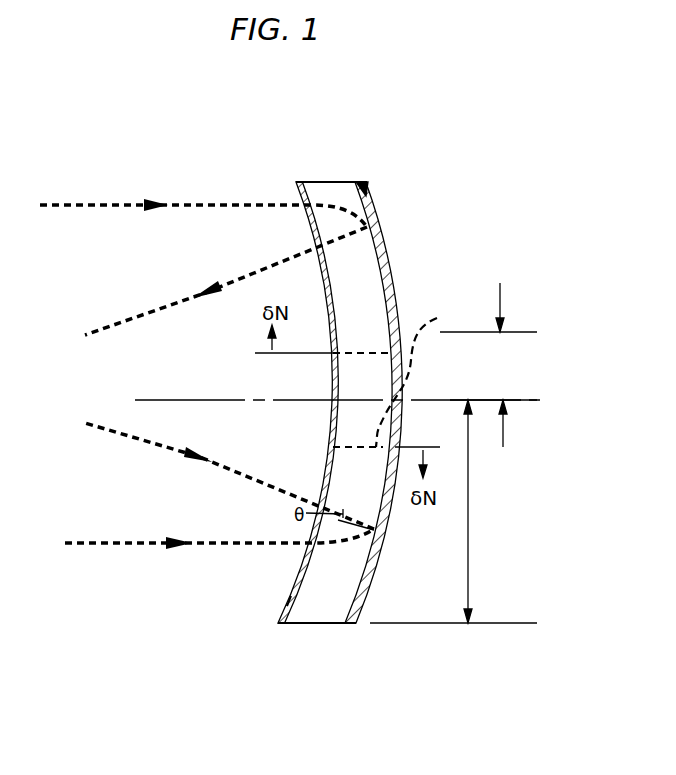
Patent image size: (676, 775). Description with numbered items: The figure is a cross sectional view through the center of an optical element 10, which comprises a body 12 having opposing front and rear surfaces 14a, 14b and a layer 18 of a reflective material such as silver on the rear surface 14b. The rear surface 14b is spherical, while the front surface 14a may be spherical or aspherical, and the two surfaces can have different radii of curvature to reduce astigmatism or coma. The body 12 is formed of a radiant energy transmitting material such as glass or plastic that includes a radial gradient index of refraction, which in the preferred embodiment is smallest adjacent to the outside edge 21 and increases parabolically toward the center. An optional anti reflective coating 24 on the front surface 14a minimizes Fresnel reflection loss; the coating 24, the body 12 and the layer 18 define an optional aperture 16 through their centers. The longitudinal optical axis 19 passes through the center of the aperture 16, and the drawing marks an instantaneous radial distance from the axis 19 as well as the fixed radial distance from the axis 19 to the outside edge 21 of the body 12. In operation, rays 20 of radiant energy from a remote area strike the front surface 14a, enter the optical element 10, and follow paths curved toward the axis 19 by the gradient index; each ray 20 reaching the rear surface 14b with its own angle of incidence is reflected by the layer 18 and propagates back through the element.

The optical element 10 is at (340, 98).
The body 12 is at (325, 181).
The front surface 14a is at (291, 584).
The rear surface 14b is at (366, 181).
The aperture 16 is at (416, 371).
The layer of reflective material 18 is at (392, 266).
The longitudinal optical axis 19 is at (528, 400).
The rays 20 is at (178, 302).
The outside edge 21 is at (295, 624).
The anti reflective coating 24 is at (297, 181).